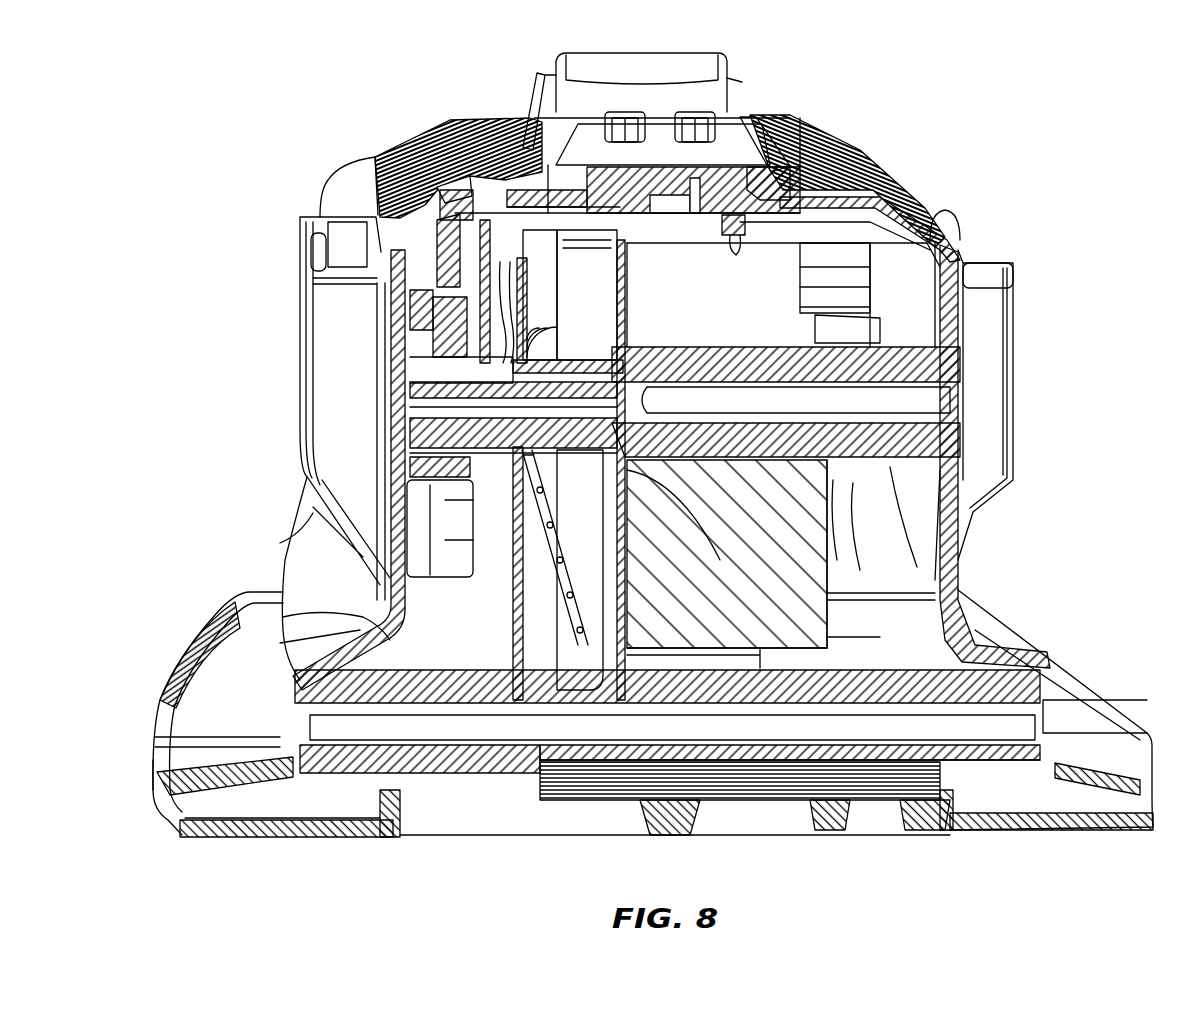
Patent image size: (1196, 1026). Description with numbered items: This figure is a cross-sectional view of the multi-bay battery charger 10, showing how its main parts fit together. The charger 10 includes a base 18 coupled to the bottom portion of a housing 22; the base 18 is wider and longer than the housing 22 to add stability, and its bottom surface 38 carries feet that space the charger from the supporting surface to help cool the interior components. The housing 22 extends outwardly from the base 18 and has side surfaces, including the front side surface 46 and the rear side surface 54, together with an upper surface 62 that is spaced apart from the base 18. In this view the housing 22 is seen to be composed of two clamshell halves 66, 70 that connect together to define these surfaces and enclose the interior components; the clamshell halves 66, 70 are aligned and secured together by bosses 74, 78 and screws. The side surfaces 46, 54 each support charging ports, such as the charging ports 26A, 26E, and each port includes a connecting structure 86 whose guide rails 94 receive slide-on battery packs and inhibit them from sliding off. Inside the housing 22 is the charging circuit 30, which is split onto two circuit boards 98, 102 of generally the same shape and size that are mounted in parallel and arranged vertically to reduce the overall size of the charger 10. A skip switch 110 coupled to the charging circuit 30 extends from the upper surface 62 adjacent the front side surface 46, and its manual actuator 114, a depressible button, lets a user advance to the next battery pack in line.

The charger 10 is at (980, 90).
The base 18 is at (1110, 717).
The housing 22 is at (742, 132).
The charging port 26A is at (282, 326).
The charging port 26E is at (1023, 304).
The charging circuit 30 is at (543, 253).
The bottom surface 38 is at (232, 838).
The side surface 46 is at (378, 582).
The side surface 54 is at (975, 553).
The upper surface 62 is at (650, 112).
The clamshell half 66 is at (378, 168).
The clamshell half 70 is at (818, 130).
The boss 74 is at (440, 427).
The boss 78 is at (953, 447).
The connecting structure 86 is at (300, 237).
The guide rail 94 is at (300, 277).
The circuit board 98 is at (370, 670).
The circuit board 102 is at (622, 588).
The skip switch 110 is at (407, 307).
The manual actuator 114 is at (409, 160).